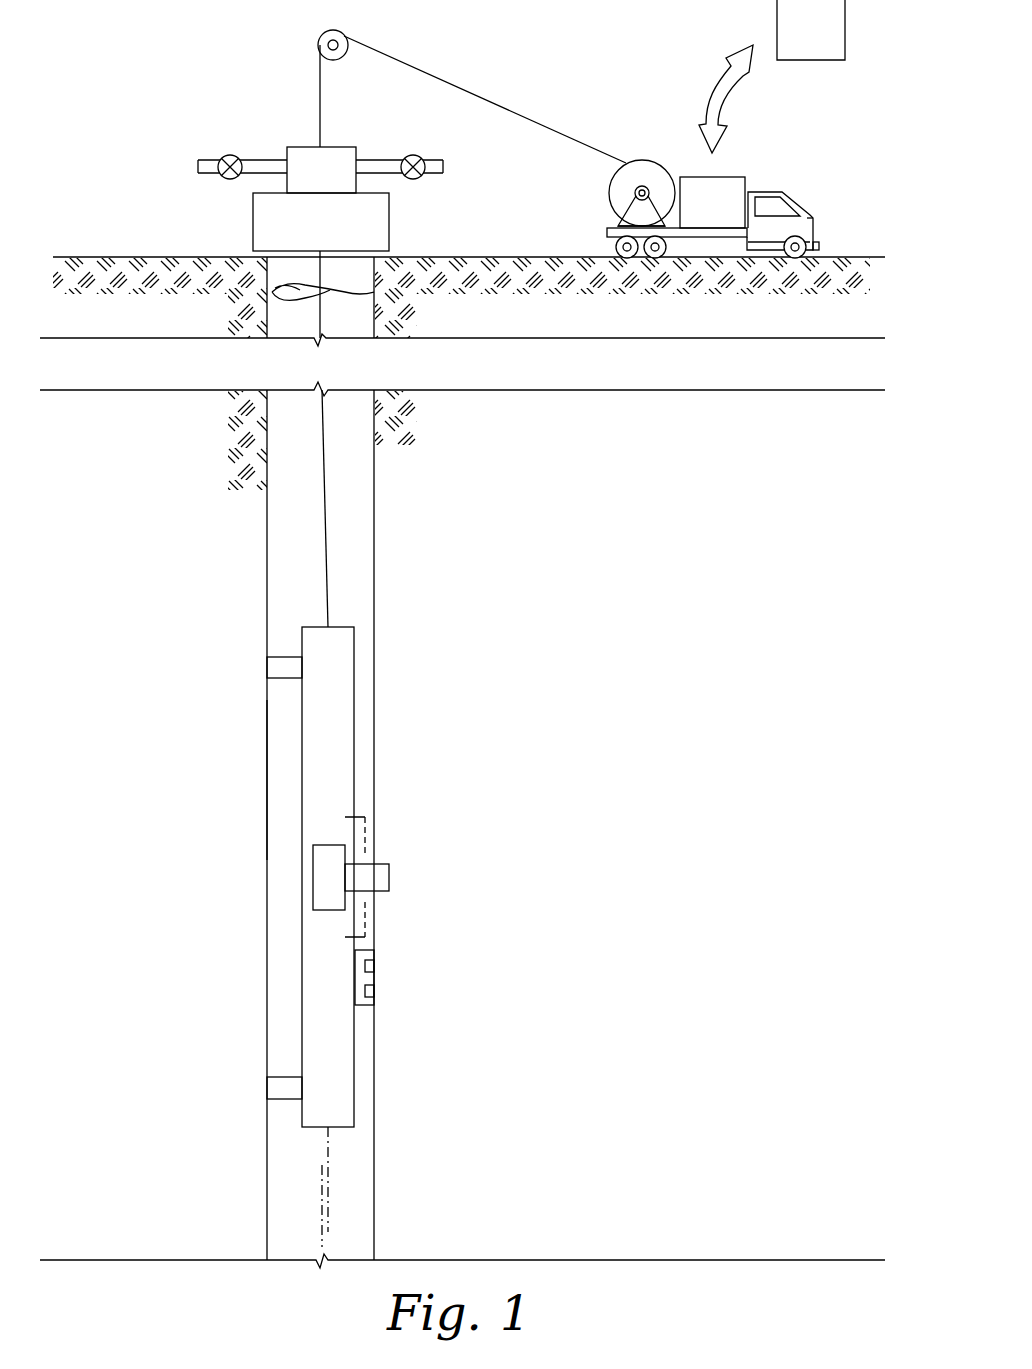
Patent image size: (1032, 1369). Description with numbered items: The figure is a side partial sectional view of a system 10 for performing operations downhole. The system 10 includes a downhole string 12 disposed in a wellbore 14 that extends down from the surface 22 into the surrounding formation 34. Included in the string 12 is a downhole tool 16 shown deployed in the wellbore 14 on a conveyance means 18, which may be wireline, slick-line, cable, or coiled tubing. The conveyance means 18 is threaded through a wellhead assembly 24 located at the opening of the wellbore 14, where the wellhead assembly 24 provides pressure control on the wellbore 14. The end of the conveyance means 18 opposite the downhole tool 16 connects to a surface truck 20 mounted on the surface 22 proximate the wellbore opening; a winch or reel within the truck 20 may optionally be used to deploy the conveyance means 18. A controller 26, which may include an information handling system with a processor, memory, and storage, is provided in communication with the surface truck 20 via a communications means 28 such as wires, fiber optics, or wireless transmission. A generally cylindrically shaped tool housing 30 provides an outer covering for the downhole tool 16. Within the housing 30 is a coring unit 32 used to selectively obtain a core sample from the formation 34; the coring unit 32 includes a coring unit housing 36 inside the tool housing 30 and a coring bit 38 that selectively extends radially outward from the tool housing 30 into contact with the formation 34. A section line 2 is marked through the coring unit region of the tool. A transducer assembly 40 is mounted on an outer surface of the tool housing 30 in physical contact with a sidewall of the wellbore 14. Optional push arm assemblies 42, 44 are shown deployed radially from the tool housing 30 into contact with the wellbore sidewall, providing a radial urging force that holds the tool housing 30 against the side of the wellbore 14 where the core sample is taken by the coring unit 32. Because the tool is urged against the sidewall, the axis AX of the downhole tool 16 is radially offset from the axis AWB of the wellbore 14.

The system 10 is at (190, 48).
The downhole string 12 is at (392, 873).
The wellbore 14 is at (360, 570).
The downhole tool 16 is at (250, 765).
The conveyance means 18 is at (327, 512).
The surface truck 20 is at (795, 178).
The surface 22 is at (846, 257).
The wellhead assembly 24 is at (215, 207).
The controller 26 is at (845, 24).
The communications means 28 is at (706, 95).
The tool housing 30 is at (342, 763).
The coring unit 32 is at (277, 828).
The formation 34 is at (703, 786).
The coring unit housing 36 is at (322, 893).
The coring bit 38 is at (392, 877).
The transducer assembly 40 is at (370, 978).
The push arm assembly 42 is at (250, 667).
The push arm assembly 44 is at (250, 1087).
The section line 2 is at (345, 817).
The axis of downhole tool AX is at (330, 1213).
The axis of wellbore AWB is at (320, 1182).